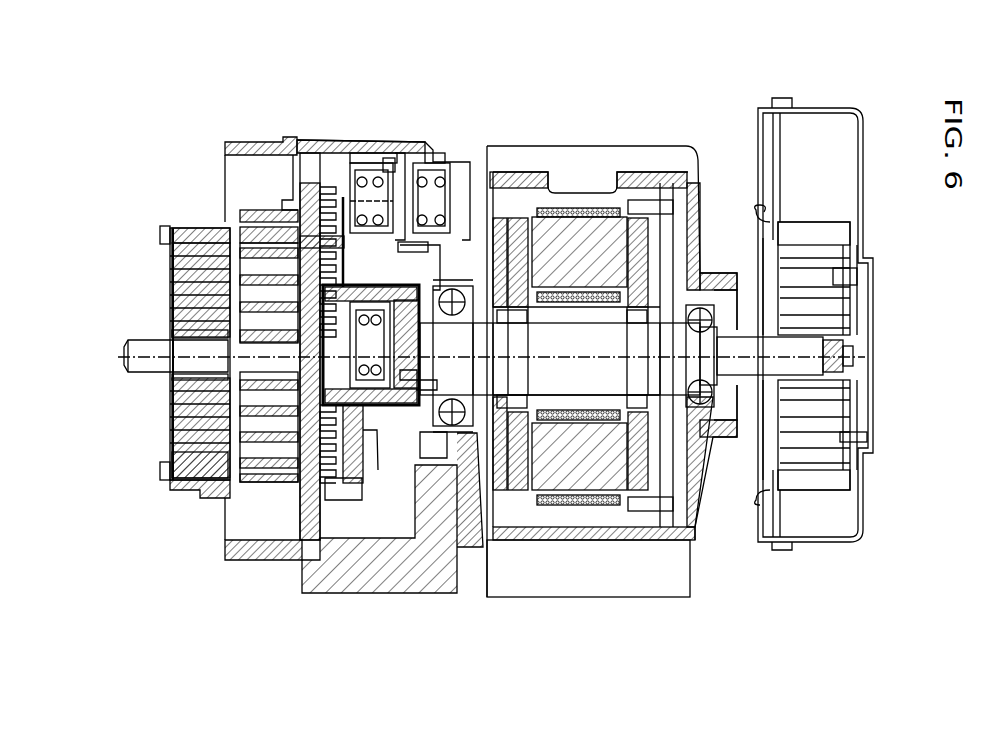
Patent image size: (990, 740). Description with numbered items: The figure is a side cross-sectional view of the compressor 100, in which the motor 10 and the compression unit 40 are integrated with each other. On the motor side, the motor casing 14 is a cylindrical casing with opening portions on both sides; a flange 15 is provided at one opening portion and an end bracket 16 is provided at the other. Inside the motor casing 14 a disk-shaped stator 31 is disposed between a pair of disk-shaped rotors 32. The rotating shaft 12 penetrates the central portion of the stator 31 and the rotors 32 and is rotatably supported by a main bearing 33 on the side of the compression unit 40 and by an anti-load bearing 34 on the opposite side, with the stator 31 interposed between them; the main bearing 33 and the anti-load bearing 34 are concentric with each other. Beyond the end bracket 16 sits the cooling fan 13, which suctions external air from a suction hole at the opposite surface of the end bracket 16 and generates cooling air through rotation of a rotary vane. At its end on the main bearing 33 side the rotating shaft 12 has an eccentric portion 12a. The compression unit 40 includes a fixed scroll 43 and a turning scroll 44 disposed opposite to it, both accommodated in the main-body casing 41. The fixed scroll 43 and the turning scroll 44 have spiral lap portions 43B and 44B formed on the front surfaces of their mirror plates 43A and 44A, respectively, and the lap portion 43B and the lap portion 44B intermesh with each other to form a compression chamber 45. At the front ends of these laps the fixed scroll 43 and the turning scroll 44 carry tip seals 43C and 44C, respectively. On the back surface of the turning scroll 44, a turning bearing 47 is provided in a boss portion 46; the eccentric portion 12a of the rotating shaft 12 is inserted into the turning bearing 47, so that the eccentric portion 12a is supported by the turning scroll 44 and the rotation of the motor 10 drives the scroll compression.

The compressor 100 is at (668, 90).
The motor 10 is at (835, 655).
The rotating shaft 12 is at (585, 345).
The eccentric portion 12a is at (402, 400).
The cooling fan 13 is at (887, 440).
The motor casing 14 is at (660, 537).
The flange 15 is at (477, 530).
The end bracket 16 is at (703, 405).
The stator 31 is at (593, 238).
The rotor 32 is at (617, 420).
The main bearing 33 is at (452, 430).
The anti-load bearing 34 is at (750, 376).
The compression unit 40 is at (470, 655).
The main-body casing 41 is at (367, 138).
The fixed scroll 43 is at (170, 244).
The mirror plate 43A is at (168, 388).
The lap portion 43B is at (168, 445).
The tip seal 43C is at (227, 477).
The turning scroll 44 is at (314, 183).
The mirror plate 44A is at (300, 245).
The lap portion 44B is at (240, 240).
The tip seal 44C is at (232, 258).
The compression chamber 45 is at (170, 415).
The boss portion 46 is at (357, 440).
The turning bearing 47 is at (300, 480).